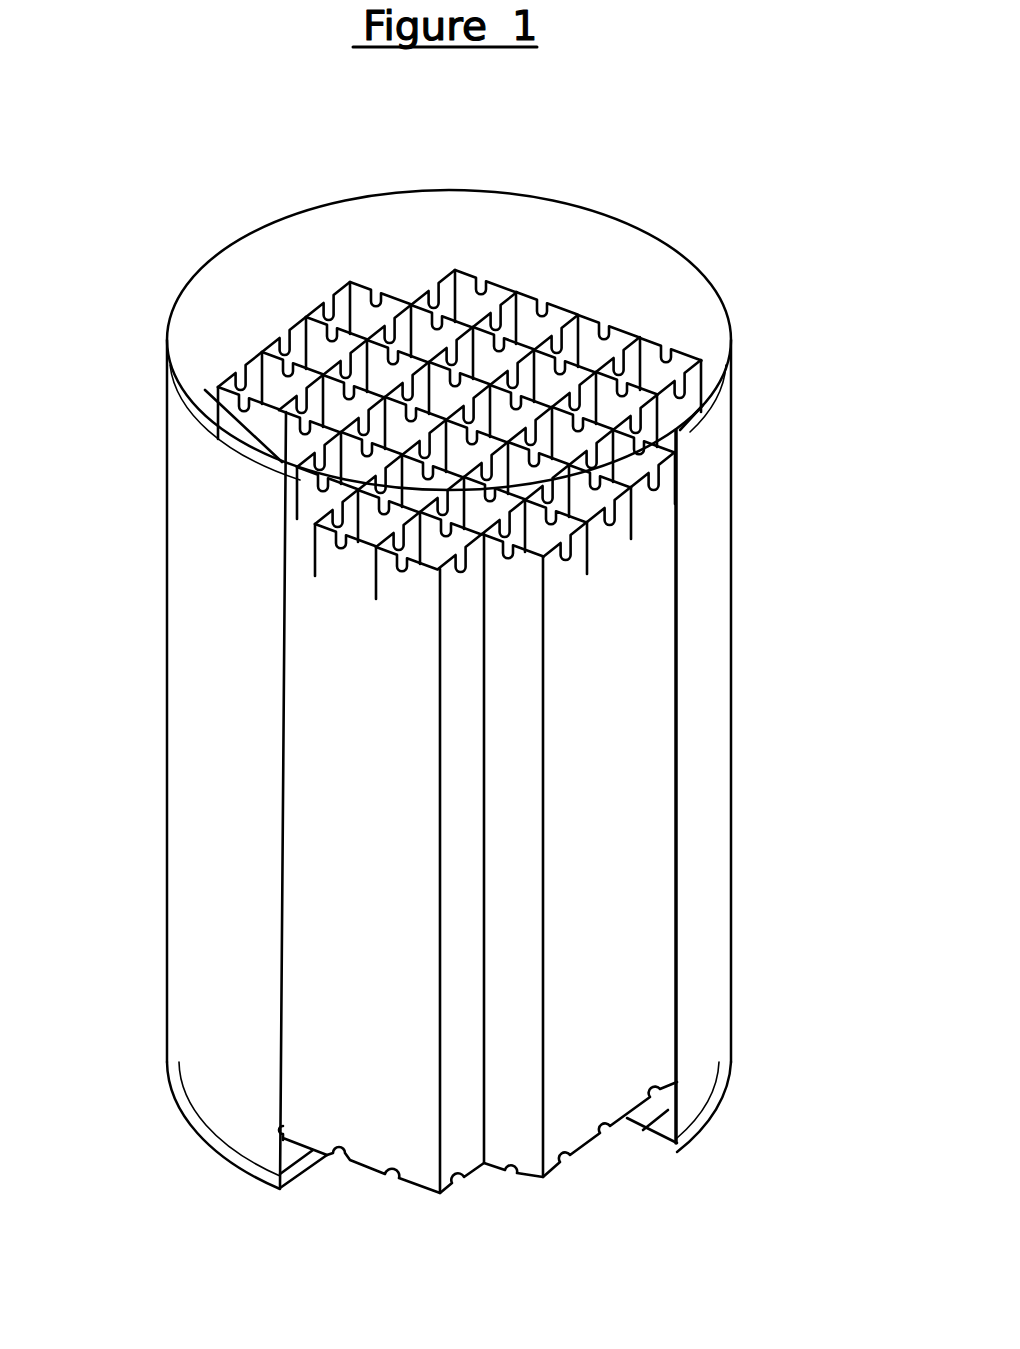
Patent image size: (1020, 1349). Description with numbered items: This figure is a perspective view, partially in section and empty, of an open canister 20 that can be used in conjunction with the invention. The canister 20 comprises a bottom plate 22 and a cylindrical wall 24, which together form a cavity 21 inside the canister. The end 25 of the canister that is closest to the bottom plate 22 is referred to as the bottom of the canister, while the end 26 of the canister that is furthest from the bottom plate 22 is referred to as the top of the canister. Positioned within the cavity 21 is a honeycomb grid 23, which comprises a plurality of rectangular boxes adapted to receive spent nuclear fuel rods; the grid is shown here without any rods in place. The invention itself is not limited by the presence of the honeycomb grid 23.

The canister 20 is at (833, 286).
The cavity 21 is at (258, 298).
The bottom plate 22 is at (230, 1160).
The honeycomb grid 23 is at (632, 630).
The cylindrical wall 24 is at (190, 897).
The end of the canister closest to the bottom plate 25 is at (200, 1078).
The end of the canister furthest from the bottom plate 26 is at (196, 462).